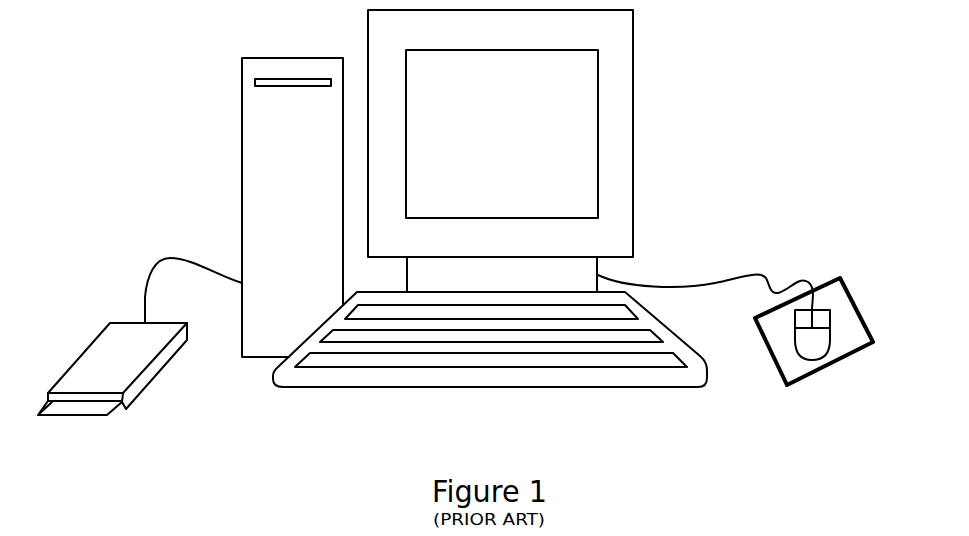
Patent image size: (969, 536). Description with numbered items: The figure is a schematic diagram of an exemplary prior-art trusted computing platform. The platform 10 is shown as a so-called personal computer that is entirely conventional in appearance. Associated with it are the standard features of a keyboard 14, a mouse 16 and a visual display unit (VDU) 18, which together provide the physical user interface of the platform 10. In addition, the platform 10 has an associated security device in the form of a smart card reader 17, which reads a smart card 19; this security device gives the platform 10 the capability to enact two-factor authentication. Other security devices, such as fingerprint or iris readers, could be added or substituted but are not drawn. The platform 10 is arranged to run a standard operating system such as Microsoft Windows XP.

The platform 10 is at (227, 388).
The keyboard 14 is at (664, 390).
The mouse 16 is at (819, 262).
The smart card reader 17 is at (90, 323).
The visual display unit (VDU) 18 is at (651, 126).
The smart card 19 is at (80, 431).